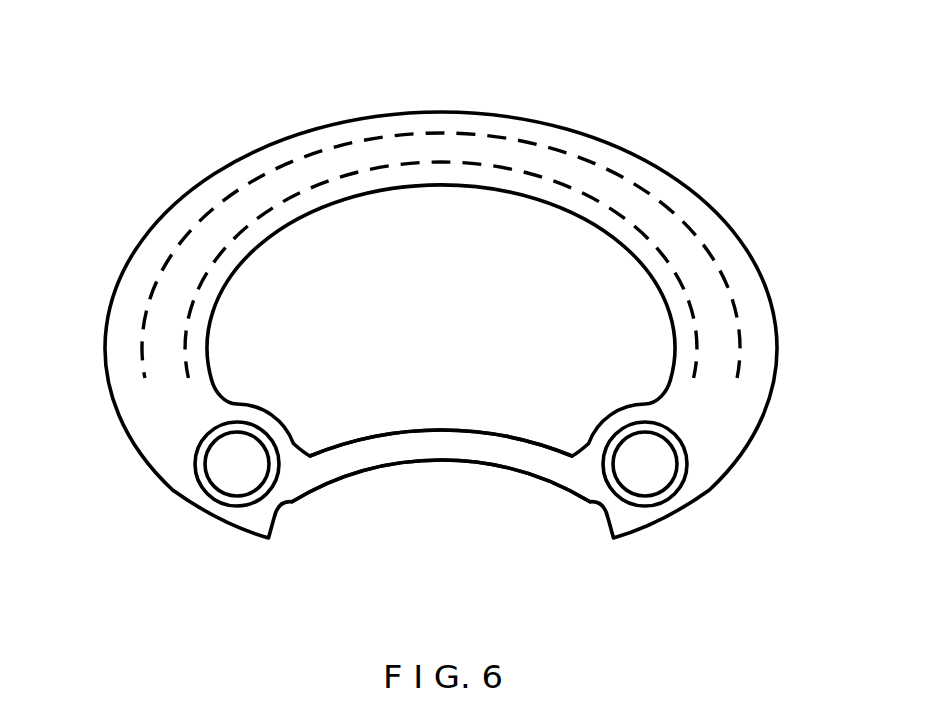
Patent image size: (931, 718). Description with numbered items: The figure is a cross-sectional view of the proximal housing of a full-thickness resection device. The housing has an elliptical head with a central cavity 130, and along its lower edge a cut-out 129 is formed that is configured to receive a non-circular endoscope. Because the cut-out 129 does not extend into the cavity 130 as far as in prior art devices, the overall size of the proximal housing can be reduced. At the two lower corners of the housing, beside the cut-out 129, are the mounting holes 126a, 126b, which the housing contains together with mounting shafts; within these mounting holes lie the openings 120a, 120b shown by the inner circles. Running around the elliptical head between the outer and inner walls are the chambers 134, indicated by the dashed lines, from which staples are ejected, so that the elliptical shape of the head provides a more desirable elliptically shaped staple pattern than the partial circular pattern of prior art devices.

The chambers 134 is at (441, 199).
The cavity 130 is at (462, 310).
The cut-out 129 is at (464, 547).
The mounting hole 126a is at (159, 493).
The mounting hole 126b is at (730, 483).
The aperture 120a is at (185, 522).
The aperture 120b is at (693, 517).